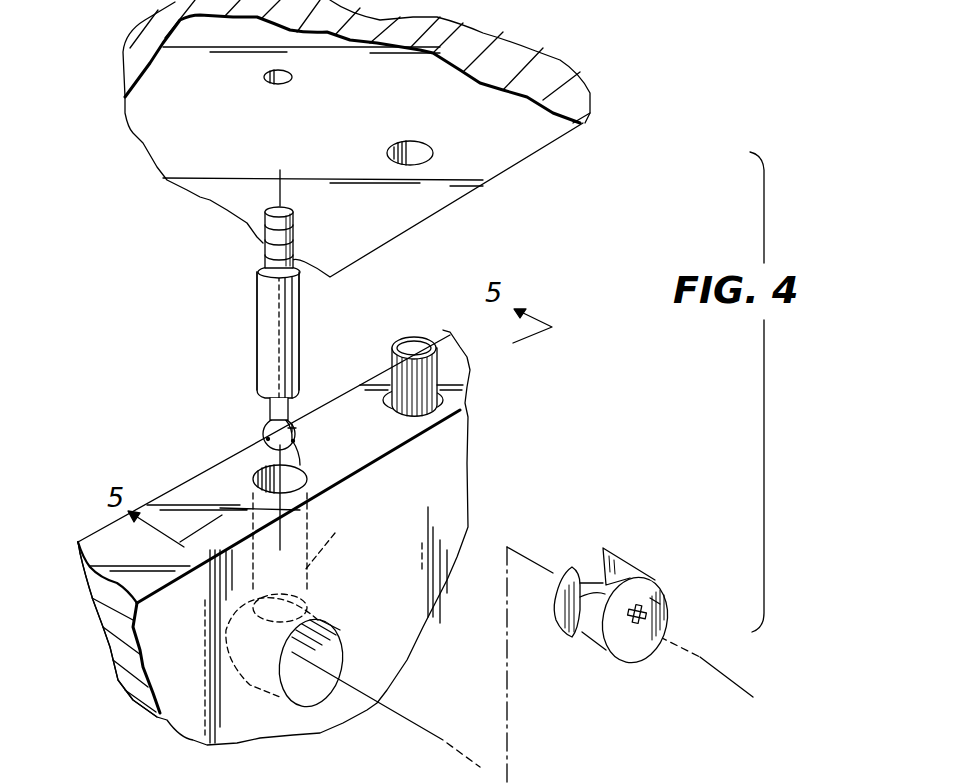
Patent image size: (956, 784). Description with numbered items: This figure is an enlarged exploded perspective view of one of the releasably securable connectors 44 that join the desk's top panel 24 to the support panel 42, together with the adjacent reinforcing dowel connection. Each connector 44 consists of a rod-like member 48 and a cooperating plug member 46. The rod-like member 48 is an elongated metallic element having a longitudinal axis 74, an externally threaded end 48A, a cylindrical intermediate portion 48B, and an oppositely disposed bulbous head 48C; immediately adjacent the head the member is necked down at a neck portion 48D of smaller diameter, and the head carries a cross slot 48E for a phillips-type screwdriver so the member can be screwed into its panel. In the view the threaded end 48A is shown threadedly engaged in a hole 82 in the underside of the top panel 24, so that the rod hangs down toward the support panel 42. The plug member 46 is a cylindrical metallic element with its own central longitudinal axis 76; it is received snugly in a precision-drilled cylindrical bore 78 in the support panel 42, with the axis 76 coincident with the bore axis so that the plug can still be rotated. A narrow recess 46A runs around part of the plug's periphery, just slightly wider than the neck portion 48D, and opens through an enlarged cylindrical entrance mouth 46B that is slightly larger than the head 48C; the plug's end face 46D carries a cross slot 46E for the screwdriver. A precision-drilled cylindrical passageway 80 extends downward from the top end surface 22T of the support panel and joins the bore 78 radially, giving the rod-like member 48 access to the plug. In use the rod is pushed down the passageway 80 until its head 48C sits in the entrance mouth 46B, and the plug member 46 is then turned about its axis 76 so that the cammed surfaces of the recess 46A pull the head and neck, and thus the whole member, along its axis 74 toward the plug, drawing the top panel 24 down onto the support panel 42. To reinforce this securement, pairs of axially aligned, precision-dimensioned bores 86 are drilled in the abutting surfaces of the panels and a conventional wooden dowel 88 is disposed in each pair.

The top panel 24 is at (500, 138).
The hole 82 is at (292, 75).
The bores 86 is at (415, 145).
The dowels 88 is at (417, 342).
The support panel 42 is at (398, 594).
The top end surface 22T is at (130, 548).
The passageway 80 is at (300, 483).
The bore 78 is at (342, 655).
The central longitudinal axis 76 is at (420, 733).
The longitudinal axis 74 is at (282, 193).
The rod-like member 48 is at (292, 350).
The threaded end 48A is at (293, 238).
The cylindrical intermediate portion 48B is at (288, 350).
The bulbous head 48C is at (297, 430).
The neck portion 48D is at (270, 405).
The cross slot 48E is at (290, 482).
The releasably securable connectors 44 is at (250, 372).
The plug member 46 is at (640, 614).
The recess 46A is at (563, 633).
The entrance mouth 46B is at (590, 585).
The end face 46D is at (657, 603).
The cross slot 46E is at (648, 645).